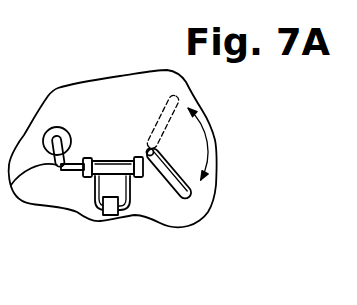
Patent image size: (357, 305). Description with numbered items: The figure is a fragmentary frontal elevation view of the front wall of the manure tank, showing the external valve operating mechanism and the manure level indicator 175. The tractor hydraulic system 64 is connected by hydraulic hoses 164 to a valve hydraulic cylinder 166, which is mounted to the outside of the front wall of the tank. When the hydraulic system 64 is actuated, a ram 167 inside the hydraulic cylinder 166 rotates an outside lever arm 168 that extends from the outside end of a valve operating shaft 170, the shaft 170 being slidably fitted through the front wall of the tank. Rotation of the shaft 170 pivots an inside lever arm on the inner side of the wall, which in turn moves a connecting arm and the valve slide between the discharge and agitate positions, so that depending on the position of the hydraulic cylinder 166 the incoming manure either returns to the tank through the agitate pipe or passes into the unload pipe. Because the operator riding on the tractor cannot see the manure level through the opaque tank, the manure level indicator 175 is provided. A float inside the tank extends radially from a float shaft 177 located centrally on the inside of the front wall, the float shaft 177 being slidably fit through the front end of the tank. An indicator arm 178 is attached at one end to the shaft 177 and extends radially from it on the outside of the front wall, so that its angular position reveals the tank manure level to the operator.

The tractor hydraulic system 64 is at (108, 216).
The hydraulic hoses 164 is at (97, 209).
The valve hydraulic cylinder 166 is at (114, 158).
The ram 167 is at (81, 163).
The outside lever arm 168 is at (20, 184).
The valve operating shaft 170 is at (58, 140).
The manure level indicator 175 is at (155, 103).
The float shaft 177 is at (147, 157).
The indicator arm 178 is at (189, 203).